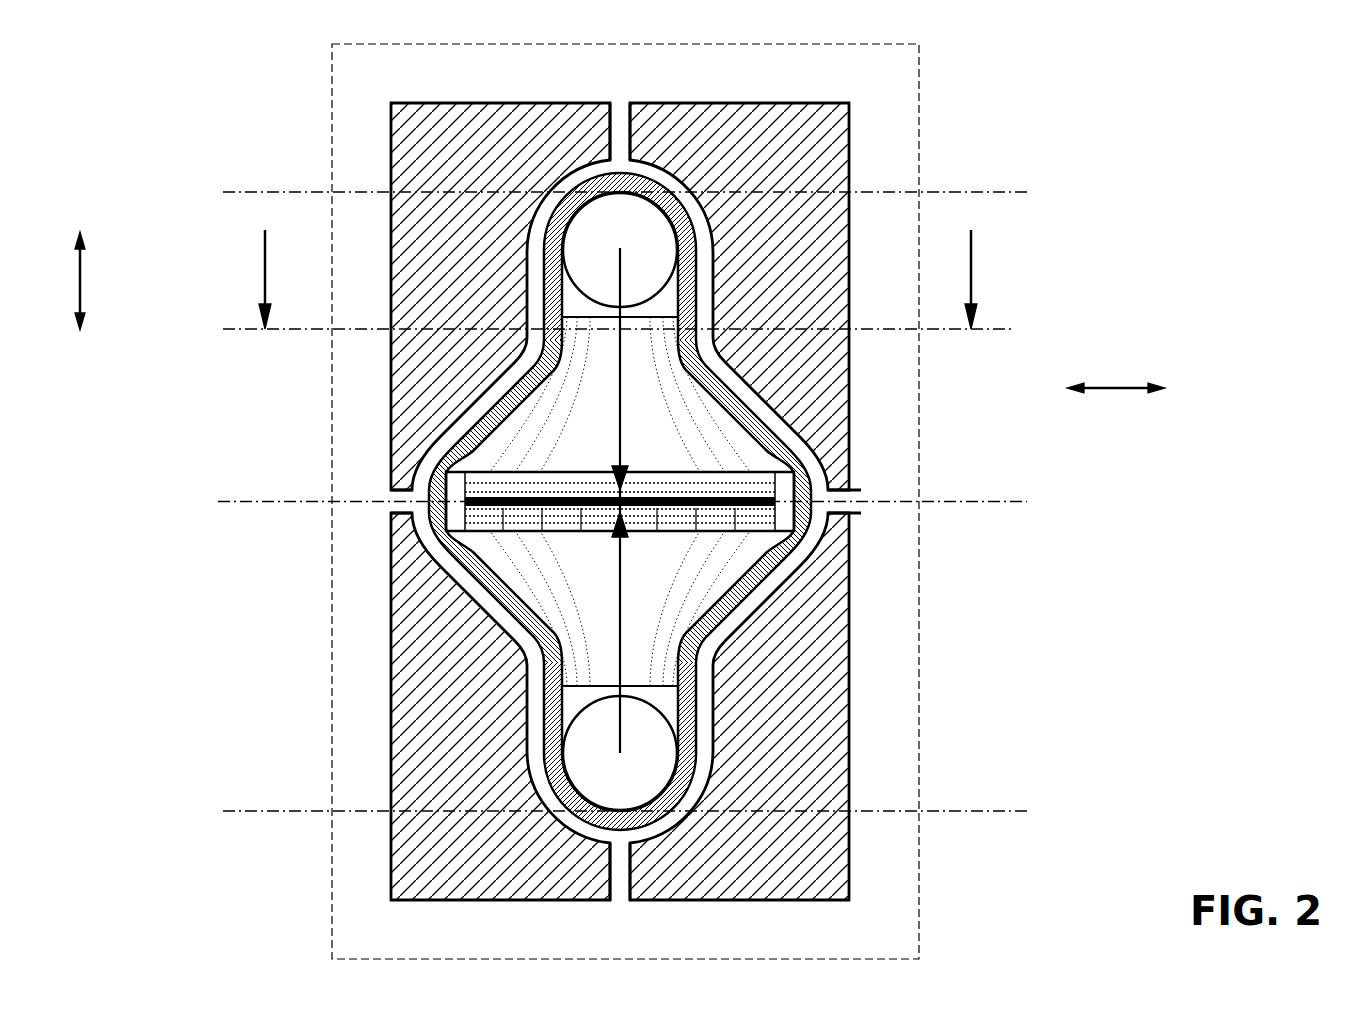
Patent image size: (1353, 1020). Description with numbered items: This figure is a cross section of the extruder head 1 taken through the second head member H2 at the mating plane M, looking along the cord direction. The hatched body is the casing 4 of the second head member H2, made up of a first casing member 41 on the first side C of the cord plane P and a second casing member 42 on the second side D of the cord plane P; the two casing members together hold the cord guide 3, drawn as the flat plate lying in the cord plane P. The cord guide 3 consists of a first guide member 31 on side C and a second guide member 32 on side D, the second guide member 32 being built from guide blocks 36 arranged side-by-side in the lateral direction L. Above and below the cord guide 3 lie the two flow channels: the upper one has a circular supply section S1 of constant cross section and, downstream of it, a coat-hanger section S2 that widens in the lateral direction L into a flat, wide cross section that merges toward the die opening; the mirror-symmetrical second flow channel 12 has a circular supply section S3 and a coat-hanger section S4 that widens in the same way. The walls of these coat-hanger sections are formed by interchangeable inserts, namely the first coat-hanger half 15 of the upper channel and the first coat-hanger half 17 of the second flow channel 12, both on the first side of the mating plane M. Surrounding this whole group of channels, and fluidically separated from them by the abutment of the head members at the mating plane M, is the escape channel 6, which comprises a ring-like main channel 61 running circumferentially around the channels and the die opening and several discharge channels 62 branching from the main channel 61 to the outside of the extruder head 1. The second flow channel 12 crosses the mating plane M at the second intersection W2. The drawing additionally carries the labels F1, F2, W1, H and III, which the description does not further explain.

The extruder head 1 is at (212, 122).
The cord guide 3 is at (620, 492).
The casing 4 is at (391, 129).
The escape channel 6 is at (530, 738).
The second flow channel 12 is at (510, 603).
The first coat-hanger half 15 is at (546, 352).
The first coat-hanger half 17 is at (440, 540).
The first guide member 31 is at (547, 481).
The second guide member 32 is at (558, 523).
The guide blocks 36 is at (681, 532).
The first casing member 41 is at (465, 103).
The second casing member 42 is at (474, 902).
The main channel 61 is at (782, 580).
The discharge channels 62 is at (607, 130).
The supply section S1 is at (645, 232).
The coat-hanger section S2 is at (793, 442).
The supply section S3 is at (583, 753).
The coat-hanger section S4 is at (580, 655).
The second head member H2 is at (861, 138).
The force 1 F1 is at (636, 500).
The force 2 F2 is at (606, 542).
The axis line W1 is at (606, 193).
The second intersection W2 is at (606, 813).
The section line III is at (614, 274).
The height direction H is at (94, 281).
The lateral direction L is at (1116, 371).
The cord plane P is at (622, 503).
The first side C is at (621, 488).
The second side D is at (622, 524).
The mating plane M is at (906, 935).